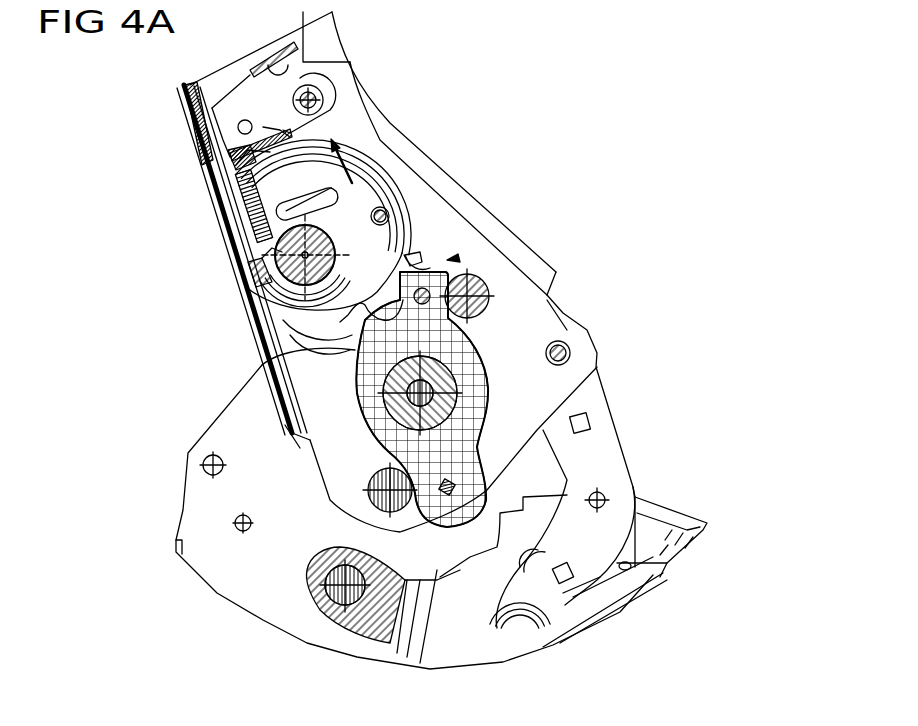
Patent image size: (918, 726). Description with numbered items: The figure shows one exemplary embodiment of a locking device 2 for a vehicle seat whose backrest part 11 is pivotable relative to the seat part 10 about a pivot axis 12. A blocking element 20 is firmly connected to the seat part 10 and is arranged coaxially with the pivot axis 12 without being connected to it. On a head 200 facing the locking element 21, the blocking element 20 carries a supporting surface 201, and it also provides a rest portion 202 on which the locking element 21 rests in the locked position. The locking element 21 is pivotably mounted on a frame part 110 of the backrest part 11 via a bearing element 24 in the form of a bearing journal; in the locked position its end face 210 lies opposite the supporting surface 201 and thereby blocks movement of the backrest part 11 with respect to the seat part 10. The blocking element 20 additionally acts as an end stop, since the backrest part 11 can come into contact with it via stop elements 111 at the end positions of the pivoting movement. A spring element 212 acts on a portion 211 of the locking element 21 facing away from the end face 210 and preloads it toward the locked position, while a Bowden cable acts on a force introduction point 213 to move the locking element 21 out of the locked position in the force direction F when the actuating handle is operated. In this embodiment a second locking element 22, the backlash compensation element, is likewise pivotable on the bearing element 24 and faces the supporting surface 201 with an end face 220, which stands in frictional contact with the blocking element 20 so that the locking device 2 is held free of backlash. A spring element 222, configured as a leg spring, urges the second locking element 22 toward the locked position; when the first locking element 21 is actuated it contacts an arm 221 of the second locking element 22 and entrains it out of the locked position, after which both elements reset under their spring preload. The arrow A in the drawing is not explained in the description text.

The locking device 2 is at (237, 378).
The seat part 10 is at (217, 563).
The backrest part 11 is at (337, 40).
The pivot axis 12 is at (460, 388).
The blocking element 20 is at (478, 410).
The locking element 21 is at (300, 316).
The second locking element 22 is at (425, 240).
The bearing element 24 is at (275, 256).
The frame part 110 is at (520, 300).
The stop elements 111 is at (490, 292).
The head 200 is at (460, 322).
The supporting surface 201 is at (447, 256).
The rest portion 202 is at (347, 320).
The end face 210 is at (412, 208).
The portion 211 is at (245, 291).
The spring element 212 is at (275, 210).
The force introduction point 213 is at (392, 210).
The end face 220 is at (420, 250).
The arm 221 is at (228, 198).
The spring element 222 is at (212, 166).
The force direction F is at (370, 140).
The direction arrow A is at (447, 260).